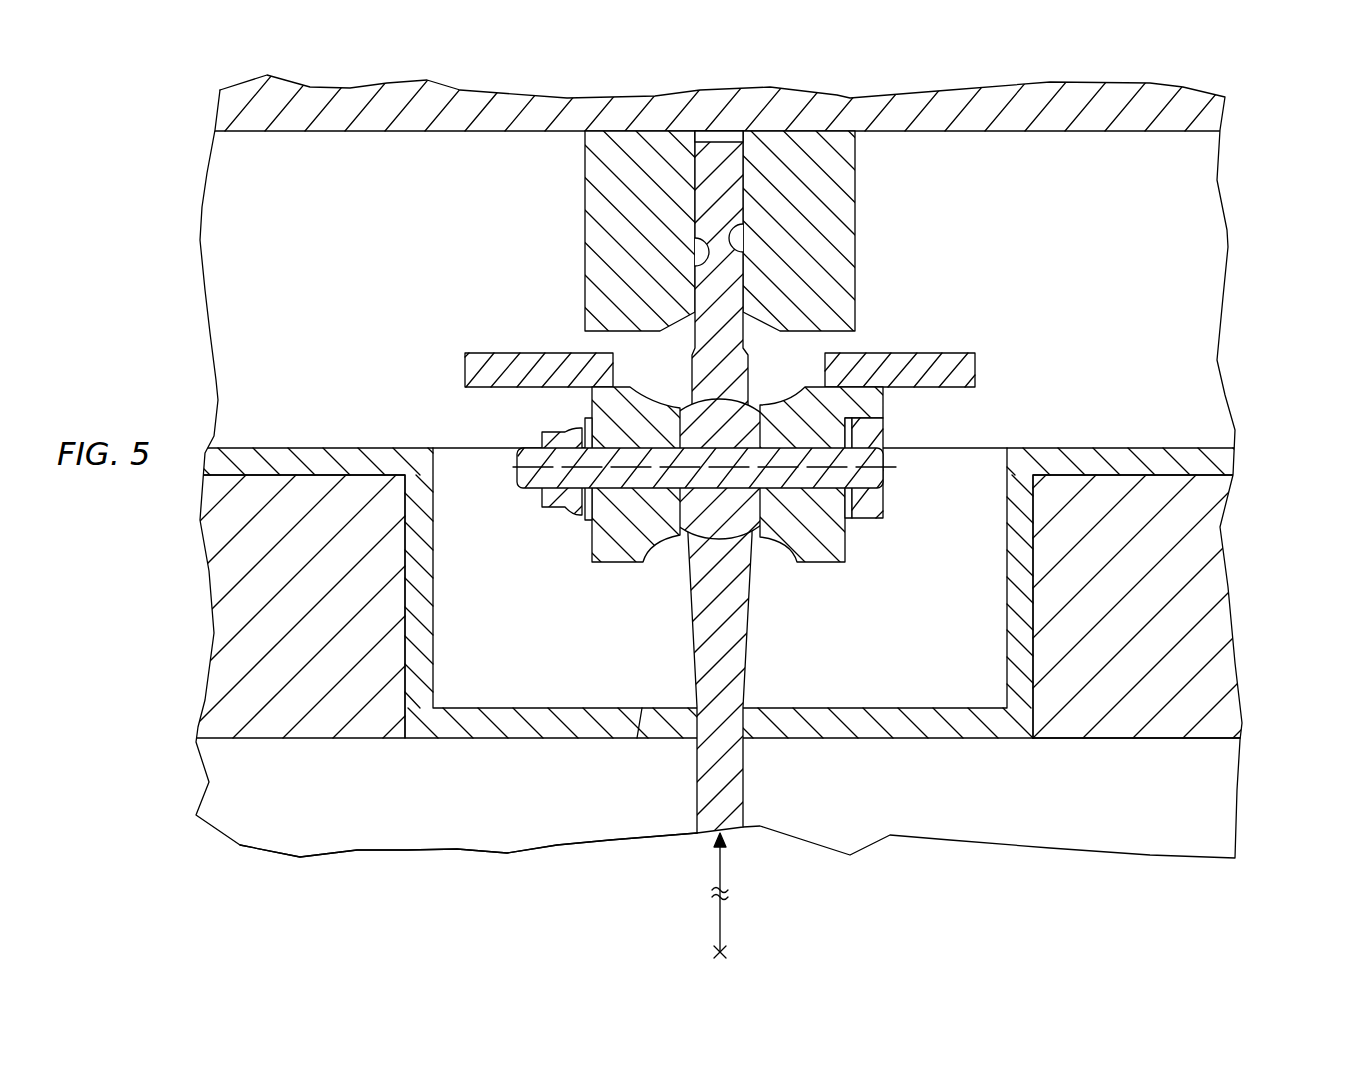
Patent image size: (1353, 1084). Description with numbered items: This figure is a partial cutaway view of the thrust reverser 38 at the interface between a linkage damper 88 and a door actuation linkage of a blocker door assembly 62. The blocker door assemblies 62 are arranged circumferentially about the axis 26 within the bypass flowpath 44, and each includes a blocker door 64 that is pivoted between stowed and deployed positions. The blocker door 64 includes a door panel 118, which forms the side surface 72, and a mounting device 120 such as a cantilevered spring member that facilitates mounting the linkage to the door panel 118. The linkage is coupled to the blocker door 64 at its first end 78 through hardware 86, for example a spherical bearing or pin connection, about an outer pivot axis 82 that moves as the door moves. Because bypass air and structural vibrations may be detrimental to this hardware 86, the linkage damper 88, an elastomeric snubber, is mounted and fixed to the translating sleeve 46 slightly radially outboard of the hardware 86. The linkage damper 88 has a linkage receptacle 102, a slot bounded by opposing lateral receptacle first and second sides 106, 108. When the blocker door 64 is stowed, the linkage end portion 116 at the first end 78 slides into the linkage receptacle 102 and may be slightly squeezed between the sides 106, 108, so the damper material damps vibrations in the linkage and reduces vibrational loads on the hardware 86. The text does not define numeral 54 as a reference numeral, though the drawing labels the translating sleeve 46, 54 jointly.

The axis 26 is at (722, 952).
The thrust reverser 38 is at (1227, 82).
The bypass flowpath 44 is at (988, 811).
The translating sleeve 46 is at (769, 96).
The cover plate 54 is at (1225, 113).
The blocker door assembly 62 is at (655, 765).
The blocker door 64 is at (1230, 588).
The side surface 72 is at (1118, 740).
The first end 78 is at (966, 444).
The outer pivot axis 82 is at (897, 470).
The hardware 86 is at (578, 545).
The linkage damper 88 is at (770, 192).
The linkage receptacle 102 is at (753, 173).
The receptacle first side 106 is at (710, 263).
The receptacle second side 108 is at (742, 240).
The linkage end portion 116 is at (722, 193).
The door panel 118 is at (745, 795).
The mounting device 120 is at (966, 353).